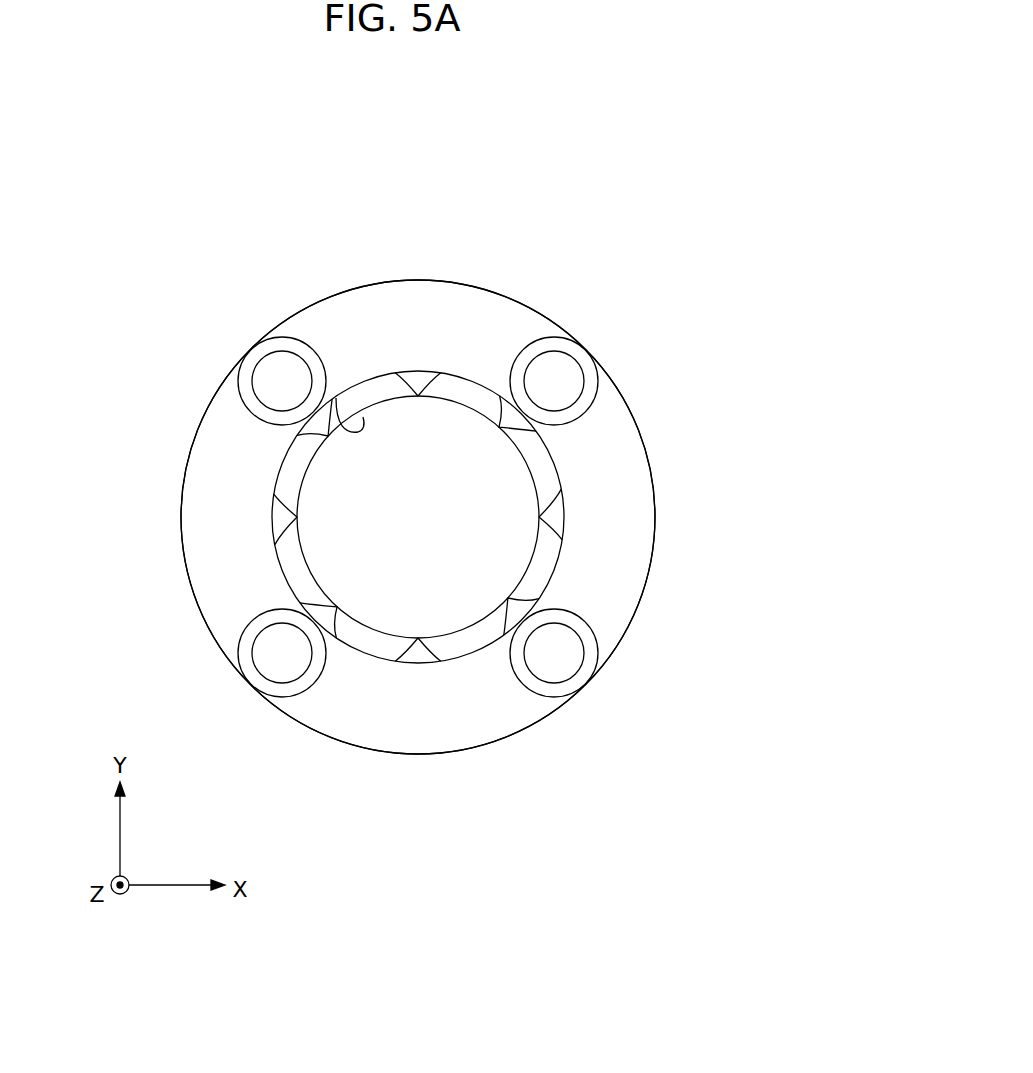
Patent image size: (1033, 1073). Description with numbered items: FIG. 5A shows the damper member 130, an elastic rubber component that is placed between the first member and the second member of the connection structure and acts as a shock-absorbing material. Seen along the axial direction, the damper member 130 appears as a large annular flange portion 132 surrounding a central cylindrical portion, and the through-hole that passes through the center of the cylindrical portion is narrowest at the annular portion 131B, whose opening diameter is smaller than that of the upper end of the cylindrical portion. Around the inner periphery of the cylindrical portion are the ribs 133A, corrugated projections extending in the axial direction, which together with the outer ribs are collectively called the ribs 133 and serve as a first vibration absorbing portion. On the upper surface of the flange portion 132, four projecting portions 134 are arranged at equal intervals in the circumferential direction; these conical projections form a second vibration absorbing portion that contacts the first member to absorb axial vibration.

The damper member 130 is at (654, 92).
The annular portion 131B is at (295, 464).
The flange portion 132 is at (617, 513).
The ribs 133 is at (392, 422).
The ribs 133A is at (362, 421).
The projecting portions 134 is at (556, 382).